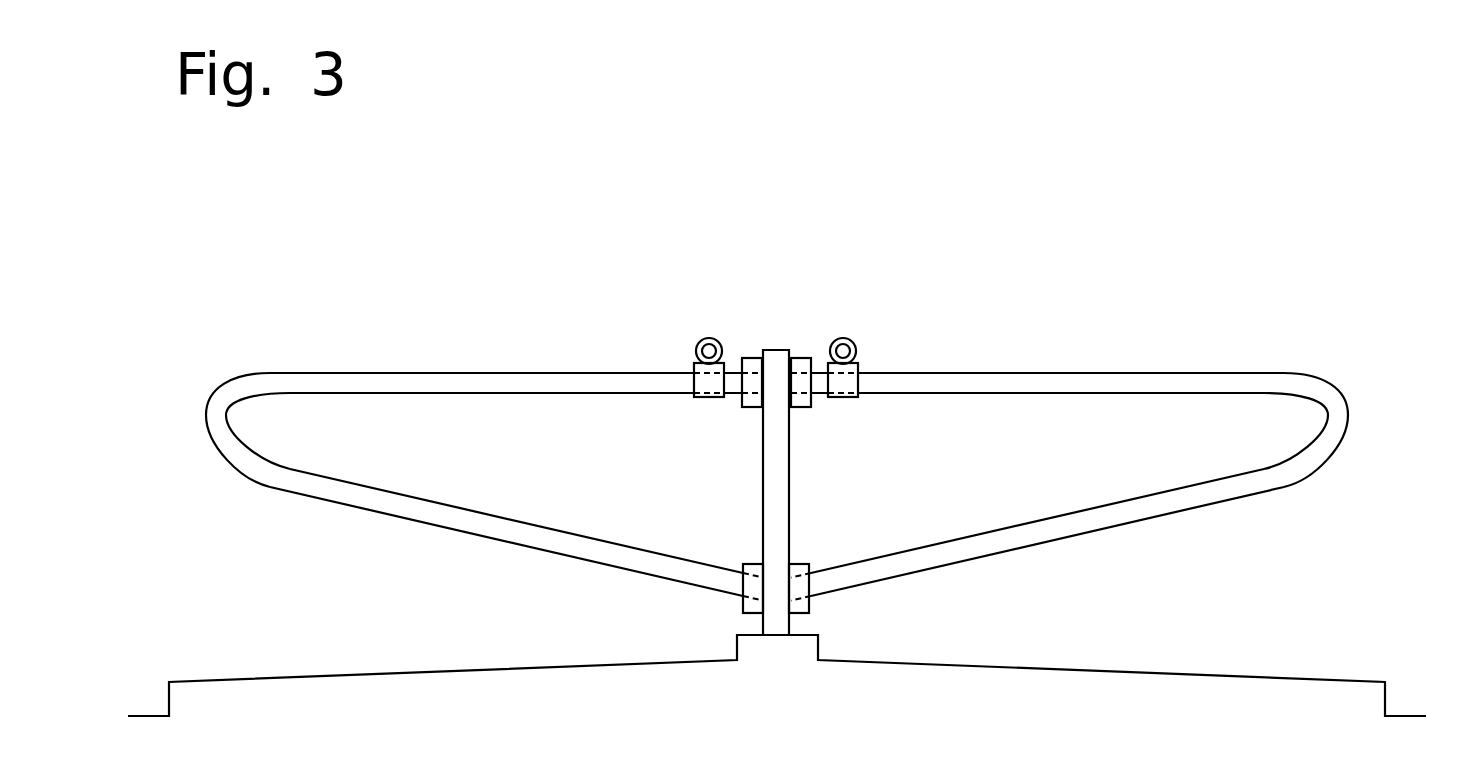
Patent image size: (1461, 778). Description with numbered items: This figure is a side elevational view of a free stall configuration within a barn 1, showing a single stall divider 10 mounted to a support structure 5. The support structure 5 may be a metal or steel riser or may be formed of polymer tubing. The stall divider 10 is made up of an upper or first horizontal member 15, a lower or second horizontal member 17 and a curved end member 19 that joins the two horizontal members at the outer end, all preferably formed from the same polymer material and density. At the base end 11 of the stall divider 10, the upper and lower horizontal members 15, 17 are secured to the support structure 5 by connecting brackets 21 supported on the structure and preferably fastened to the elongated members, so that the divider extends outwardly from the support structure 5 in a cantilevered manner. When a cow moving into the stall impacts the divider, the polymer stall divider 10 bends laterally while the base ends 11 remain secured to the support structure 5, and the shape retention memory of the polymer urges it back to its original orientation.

The barn 1 is at (1130, 672).
The support structure 5 is at (773, 474).
The stall divider 10 is at (290, 267).
The base end 11 is at (730, 362).
The upper horizontal member 15 is at (435, 372).
The lower horizontal member 17 is at (548, 531).
The curved end member 19 is at (230, 428).
The connecting bracket 21 is at (795, 358).